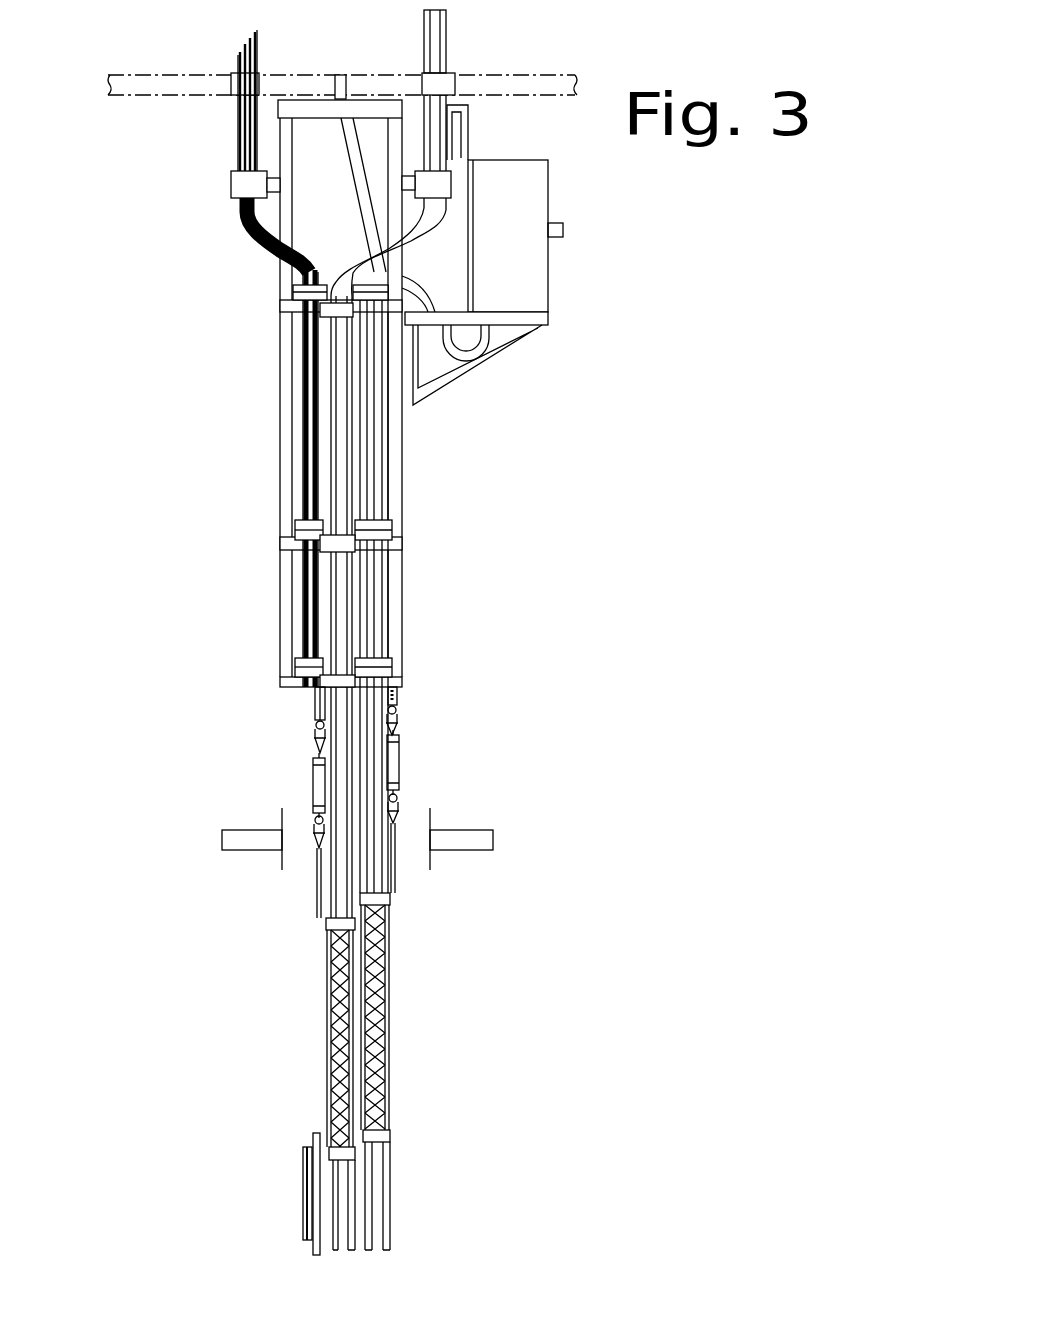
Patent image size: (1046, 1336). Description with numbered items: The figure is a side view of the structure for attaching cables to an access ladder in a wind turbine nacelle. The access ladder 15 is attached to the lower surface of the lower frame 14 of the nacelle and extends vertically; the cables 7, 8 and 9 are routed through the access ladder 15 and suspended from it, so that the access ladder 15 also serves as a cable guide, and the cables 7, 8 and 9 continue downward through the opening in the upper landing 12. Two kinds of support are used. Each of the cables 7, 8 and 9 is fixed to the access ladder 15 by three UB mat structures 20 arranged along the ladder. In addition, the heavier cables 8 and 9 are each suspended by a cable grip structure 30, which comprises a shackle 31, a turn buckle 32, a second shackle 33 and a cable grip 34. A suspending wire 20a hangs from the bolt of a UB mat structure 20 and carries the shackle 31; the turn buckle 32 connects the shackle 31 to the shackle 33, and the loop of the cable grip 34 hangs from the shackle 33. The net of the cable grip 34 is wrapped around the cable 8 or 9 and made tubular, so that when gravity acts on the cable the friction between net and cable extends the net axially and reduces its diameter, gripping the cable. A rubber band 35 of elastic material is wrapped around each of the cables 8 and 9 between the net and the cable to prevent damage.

The lower frame 14 is at (115, 73).
The access ladder 15 is at (402, 592).
The cable 7 is at (308, 1193).
The cable 8 is at (338, 1228).
The cable 9 is at (377, 1210).
The UB mat structure 20 is at (322, 306).
The suspending wire 20a is at (315, 705).
The upper landing 12 is at (222, 832).
The cable grip structure 30 is at (137, 1021).
The shackle 31 is at (315, 745).
The turn buckle 32 is at (313, 790).
The shackle 33 is at (318, 843).
The cable grip 34 is at (326, 995).
The rubber band 35 is at (330, 1150).